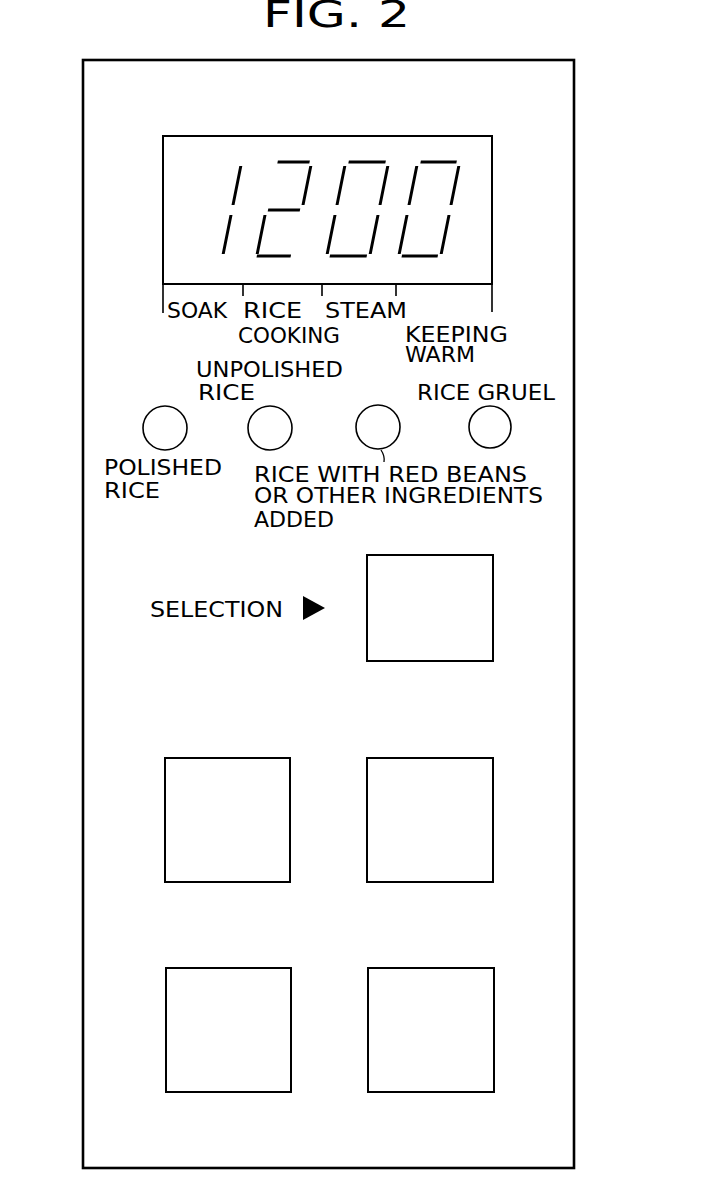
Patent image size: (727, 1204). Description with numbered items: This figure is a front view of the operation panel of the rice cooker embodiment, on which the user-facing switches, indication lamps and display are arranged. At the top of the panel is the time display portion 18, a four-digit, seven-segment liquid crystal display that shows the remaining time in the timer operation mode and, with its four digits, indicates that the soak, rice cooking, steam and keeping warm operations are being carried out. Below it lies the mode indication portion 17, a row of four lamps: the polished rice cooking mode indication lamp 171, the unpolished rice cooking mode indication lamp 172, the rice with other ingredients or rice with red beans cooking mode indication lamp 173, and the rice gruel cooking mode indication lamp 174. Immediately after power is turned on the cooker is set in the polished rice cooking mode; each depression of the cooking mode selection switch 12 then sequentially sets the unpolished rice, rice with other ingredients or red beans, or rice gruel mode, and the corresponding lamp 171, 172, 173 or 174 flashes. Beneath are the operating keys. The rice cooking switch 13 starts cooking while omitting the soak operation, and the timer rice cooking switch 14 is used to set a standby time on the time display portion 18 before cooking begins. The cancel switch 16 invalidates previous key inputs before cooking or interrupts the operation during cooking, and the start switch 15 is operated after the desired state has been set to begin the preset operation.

The cooking mode selection switch 12 is at (493, 600).
The rice cooking switch 13 is at (165, 827).
The timer rice cooking switch 14 is at (493, 822).
The start switch 15 is at (494, 1021).
The cancel switch 16 is at (166, 1018).
The mode indication portion 17 is at (363, 426).
The polished rice cooking mode indication lamp 171 is at (143, 428).
The unpolished rice cooking mode indication lamp 172 is at (248, 428).
The rice with other ingredients or rice with red beans cooking mode indication lamp 173 is at (356, 427).
The rice gruel cooking mode indication lamp 174 is at (469, 430).
The time display portion 18 is at (497, 198).